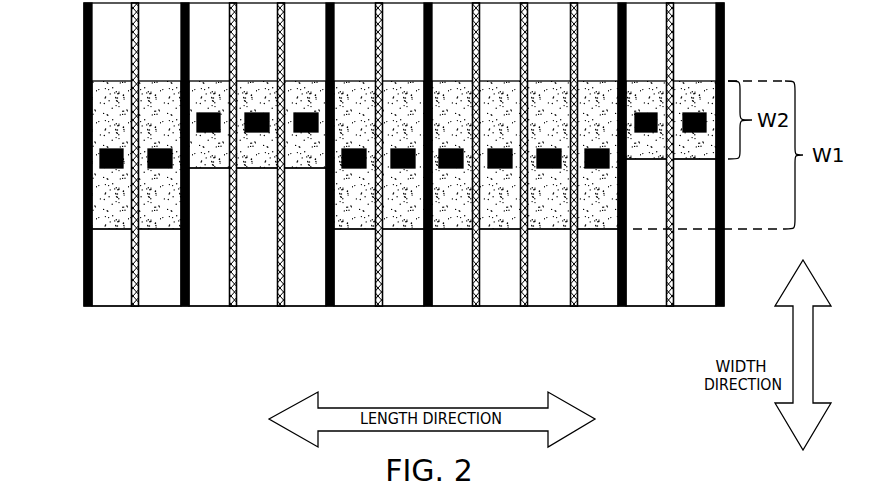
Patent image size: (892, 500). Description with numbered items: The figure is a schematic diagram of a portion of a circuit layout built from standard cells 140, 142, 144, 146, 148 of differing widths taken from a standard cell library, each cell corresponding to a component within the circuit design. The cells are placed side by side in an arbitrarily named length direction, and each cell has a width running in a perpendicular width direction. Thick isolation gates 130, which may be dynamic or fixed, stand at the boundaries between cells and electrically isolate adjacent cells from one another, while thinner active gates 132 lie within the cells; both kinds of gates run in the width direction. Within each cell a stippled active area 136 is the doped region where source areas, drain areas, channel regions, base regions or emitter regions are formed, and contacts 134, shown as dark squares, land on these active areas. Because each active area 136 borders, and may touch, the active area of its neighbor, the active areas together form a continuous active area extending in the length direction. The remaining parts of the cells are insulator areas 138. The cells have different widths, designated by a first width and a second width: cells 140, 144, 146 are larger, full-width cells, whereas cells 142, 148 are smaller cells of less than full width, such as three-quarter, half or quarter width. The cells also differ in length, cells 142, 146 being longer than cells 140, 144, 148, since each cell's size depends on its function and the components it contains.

The isolation gate 130 is at (84, 22).
The active gate 132 is at (135, 60).
The contact 134 is at (107, 148).
The active area 136 is at (100, 210).
The insulator area 138 is at (98, 267).
The full-width cell 140 is at (84, 312).
The less-than-full-width cell 142 is at (182, 332).
The full-width cell 144 is at (327, 312).
The full-width cell 146 is at (425, 332).
The less-than-full-width cell 148 is at (618, 312).